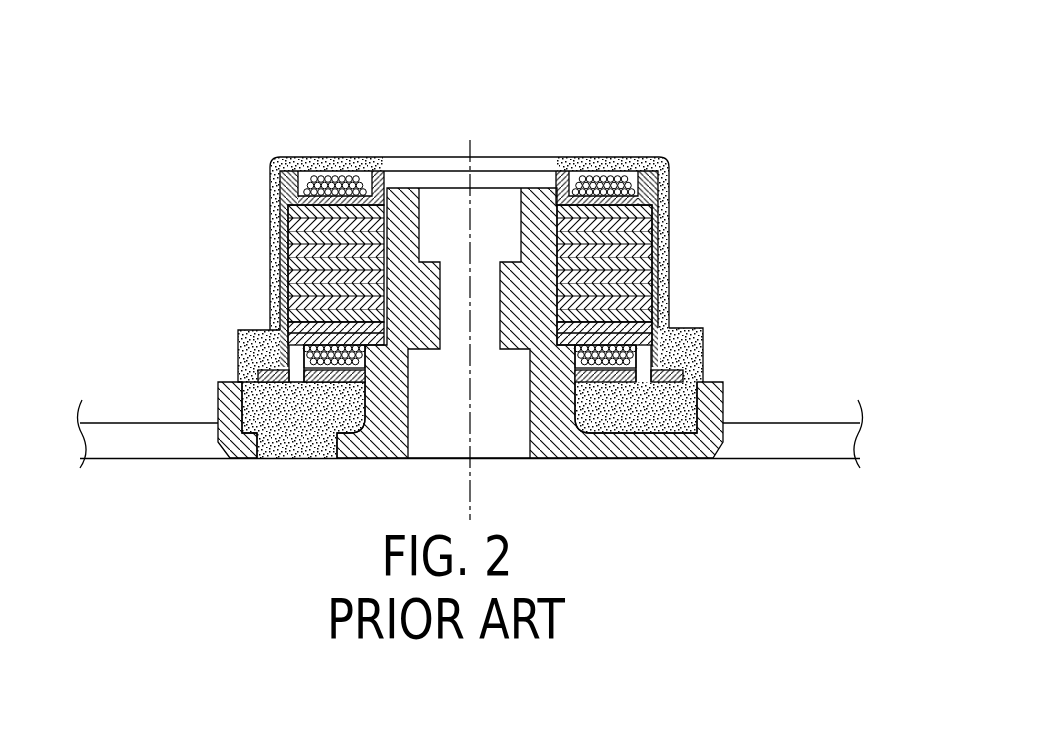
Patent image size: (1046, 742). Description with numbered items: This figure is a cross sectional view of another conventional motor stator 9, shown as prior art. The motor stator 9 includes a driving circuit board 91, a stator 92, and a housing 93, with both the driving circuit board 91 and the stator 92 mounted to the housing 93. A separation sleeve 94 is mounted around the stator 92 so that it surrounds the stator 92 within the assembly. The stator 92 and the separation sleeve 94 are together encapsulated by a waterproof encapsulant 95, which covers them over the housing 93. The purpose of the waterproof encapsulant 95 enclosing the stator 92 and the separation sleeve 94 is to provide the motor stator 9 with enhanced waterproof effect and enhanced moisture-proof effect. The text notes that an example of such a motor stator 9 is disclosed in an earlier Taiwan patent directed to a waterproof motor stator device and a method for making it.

The motor stator 9 is at (470, 271).
The driving circuit board 91 is at (676, 372).
The stator 92 is at (599, 174).
The housing 93 is at (723, 394).
The separation sleeve 94 is at (658, 268).
The waterproof encapsulant 95 is at (668, 236).